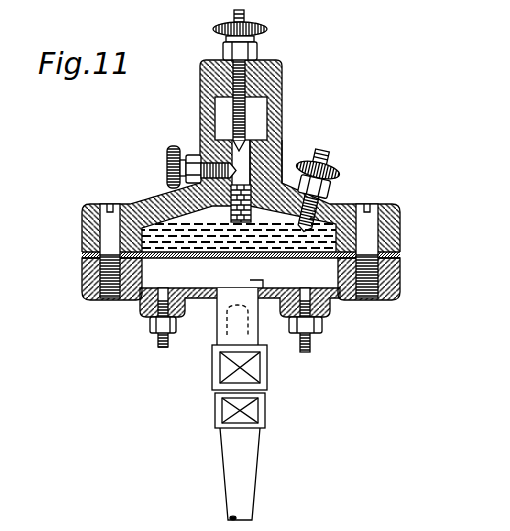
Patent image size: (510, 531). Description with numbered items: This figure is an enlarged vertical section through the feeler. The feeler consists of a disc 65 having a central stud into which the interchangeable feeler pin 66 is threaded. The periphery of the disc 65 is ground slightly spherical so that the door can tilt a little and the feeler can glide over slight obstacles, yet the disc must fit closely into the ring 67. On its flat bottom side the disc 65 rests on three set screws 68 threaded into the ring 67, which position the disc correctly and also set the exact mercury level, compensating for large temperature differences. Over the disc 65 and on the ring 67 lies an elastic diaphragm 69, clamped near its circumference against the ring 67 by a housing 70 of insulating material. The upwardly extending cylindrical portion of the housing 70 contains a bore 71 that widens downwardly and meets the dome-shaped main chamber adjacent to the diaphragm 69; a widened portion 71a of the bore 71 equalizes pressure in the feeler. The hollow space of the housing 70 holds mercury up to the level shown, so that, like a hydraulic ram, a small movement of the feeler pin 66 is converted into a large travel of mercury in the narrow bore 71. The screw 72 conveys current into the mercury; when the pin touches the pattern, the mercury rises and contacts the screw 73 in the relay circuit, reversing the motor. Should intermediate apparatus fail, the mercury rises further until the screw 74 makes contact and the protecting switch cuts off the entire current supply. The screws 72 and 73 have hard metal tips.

The disc 65 is at (329, 280).
The feeler pin 66 is at (246, 460).
The ring 67 is at (394, 282).
The set screws 68 is at (158, 345).
The elastic diaphragm 69 is at (396, 255).
The housing 70 is at (200, 98).
The bore 71 is at (281, 147).
The widened portion 71a is at (260, 113).
The screw 72 is at (330, 157).
The screw 73 is at (165, 158).
The screw 74 is at (263, 58).